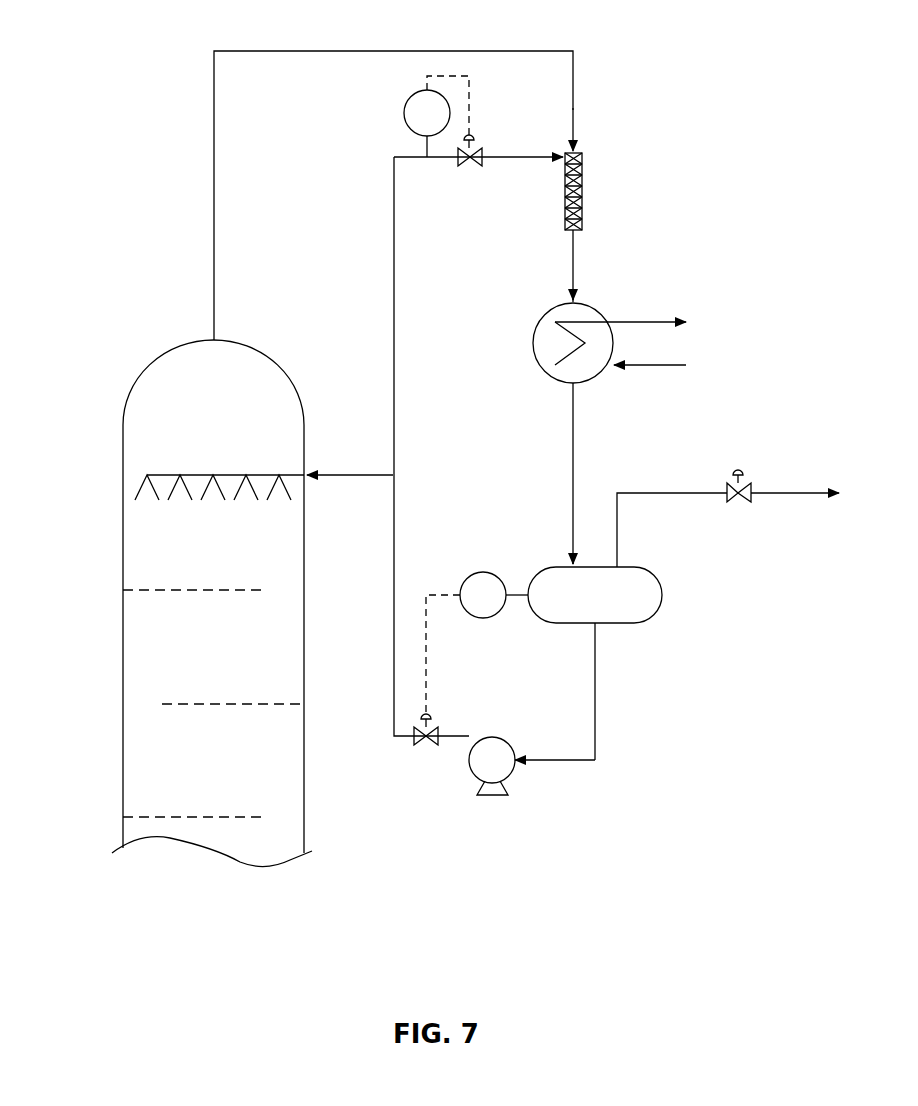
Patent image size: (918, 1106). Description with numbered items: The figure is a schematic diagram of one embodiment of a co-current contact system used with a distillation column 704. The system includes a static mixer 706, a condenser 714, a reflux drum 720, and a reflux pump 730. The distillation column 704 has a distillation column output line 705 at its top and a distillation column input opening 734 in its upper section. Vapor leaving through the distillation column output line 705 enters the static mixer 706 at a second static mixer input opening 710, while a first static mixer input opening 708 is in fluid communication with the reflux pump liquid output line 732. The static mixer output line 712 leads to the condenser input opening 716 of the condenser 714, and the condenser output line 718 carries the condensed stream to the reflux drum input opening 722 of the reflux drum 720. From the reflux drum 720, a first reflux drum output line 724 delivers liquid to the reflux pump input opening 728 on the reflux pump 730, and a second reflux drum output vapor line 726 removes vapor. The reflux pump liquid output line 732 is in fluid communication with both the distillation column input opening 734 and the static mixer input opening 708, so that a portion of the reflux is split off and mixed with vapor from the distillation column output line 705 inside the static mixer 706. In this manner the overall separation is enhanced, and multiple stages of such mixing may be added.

The distillation column 704 is at (123, 622).
The distillation column output line 705 is at (216, 328).
The static mixer 706 is at (583, 187).
The first static mixer input opening 708 is at (560, 160).
The second static mixer input opening 710 is at (578, 148).
The static mixer output line 712 is at (576, 242).
The condenser 714 is at (542, 318).
The condenser input opening 716 is at (578, 304).
The condenser output line 718 is at (573, 393).
The reflux drum 720 is at (662, 592).
The reflux drum input opening 722 is at (568, 562).
The first reflux drum output line 724 is at (596, 645).
The second reflux drum output vapor line 726 is at (618, 528).
The reflux pump input opening 728 is at (510, 768).
The reflux pump 730 is at (506, 745).
The reflux pump liquid output line 732 is at (478, 736).
The distillation column input opening 734 is at (305, 472).